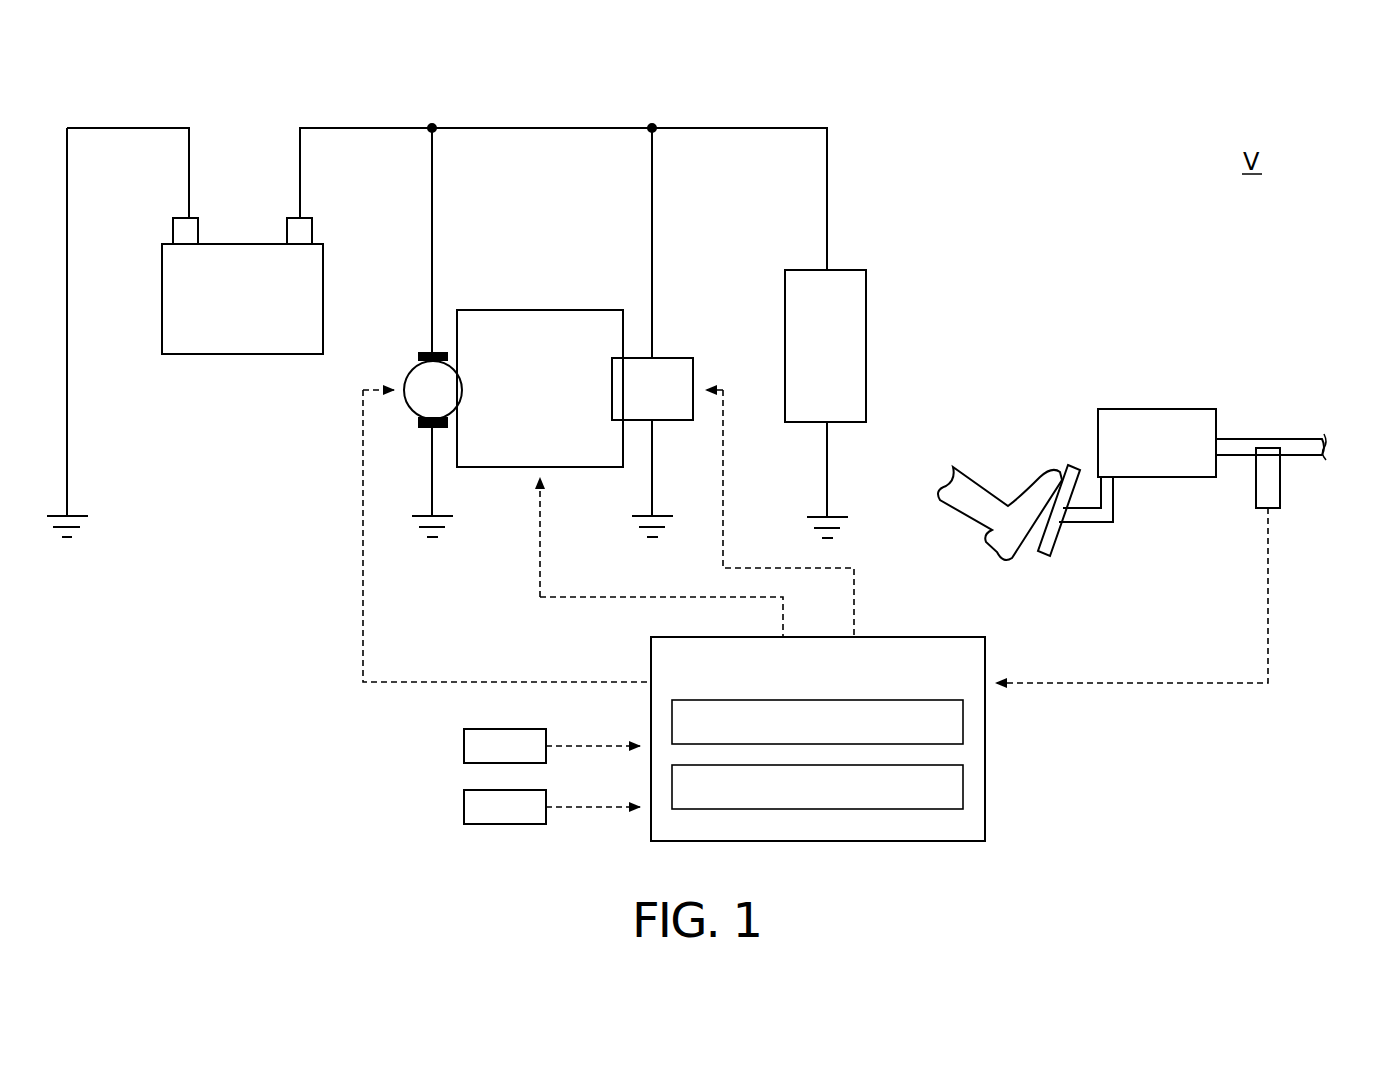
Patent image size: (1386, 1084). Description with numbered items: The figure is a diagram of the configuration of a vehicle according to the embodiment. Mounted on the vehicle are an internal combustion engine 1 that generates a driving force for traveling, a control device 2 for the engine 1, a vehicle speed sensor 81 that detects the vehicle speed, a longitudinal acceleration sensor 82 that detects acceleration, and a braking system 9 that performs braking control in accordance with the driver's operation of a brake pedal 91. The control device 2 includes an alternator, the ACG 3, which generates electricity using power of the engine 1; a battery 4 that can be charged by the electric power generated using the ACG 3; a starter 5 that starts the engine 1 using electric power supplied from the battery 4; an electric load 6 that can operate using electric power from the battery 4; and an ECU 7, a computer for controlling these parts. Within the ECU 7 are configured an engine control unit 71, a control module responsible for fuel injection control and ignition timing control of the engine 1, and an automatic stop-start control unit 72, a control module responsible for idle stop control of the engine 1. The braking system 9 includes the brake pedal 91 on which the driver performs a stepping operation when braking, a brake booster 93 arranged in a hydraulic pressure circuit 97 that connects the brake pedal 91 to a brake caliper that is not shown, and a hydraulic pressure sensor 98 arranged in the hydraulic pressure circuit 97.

The engine 1 is at (568, 314).
The control device 2 is at (944, 136).
The ACG 3 is at (680, 360).
The battery 4 is at (230, 250).
The starter 5 is at (422, 355).
The electric load 6 is at (846, 274).
The ECU 7 is at (920, 644).
The braking system 9 is at (1078, 358).
The engine control unit 71 is at (960, 722).
The automatic stop-start control unit 72 is at (960, 790).
The vehicle speed sensor 81 is at (466, 748).
The longitudinal acceleration sensor 82 is at (466, 807).
The brake pedal 91 is at (1050, 547).
The brake booster 93 is at (1183, 416).
The hydraulic pressure circuit 97 is at (1300, 440).
The hydraulic pressure sensor 98 is at (1276, 488).